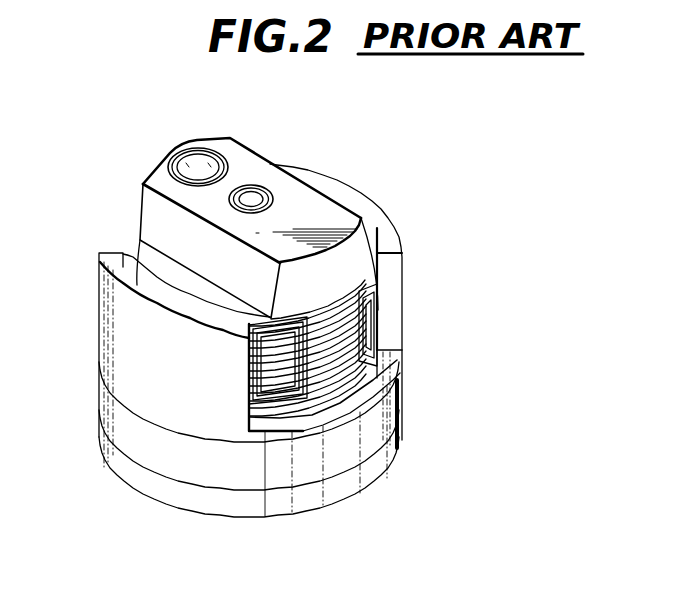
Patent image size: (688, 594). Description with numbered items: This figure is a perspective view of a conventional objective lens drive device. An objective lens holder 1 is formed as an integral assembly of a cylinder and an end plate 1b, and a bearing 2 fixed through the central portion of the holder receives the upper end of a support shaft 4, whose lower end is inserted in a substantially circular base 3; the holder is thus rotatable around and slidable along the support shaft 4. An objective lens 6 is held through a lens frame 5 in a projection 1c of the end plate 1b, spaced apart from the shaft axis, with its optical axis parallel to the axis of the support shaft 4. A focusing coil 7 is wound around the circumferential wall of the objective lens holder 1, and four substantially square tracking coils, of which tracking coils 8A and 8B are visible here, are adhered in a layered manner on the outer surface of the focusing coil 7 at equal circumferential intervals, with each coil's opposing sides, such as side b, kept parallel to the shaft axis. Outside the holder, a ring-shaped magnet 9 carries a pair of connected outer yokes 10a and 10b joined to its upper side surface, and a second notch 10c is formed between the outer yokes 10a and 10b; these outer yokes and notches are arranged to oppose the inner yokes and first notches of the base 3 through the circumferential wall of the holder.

The objective lens holder 1 is at (254, 224).
The end plate 1b is at (148, 258).
The projection 1c is at (310, 208).
The bearing 2 is at (246, 194).
The base 3 is at (120, 455).
The support shaft 4 is at (252, 200).
The lens frame 5 is at (178, 156).
The objective lens 6 is at (200, 166).
The focusing coil 7 is at (396, 421).
The tracking coil 8A is at (268, 403).
The tracking coil 8B is at (380, 302).
The ring-shaped magnet 9 is at (103, 408).
The outer yoke 10a is at (101, 290).
The outer yoke 10b is at (356, 200).
The second notch 10c is at (381, 362).
The side of tracking coil b is at (362, 332).